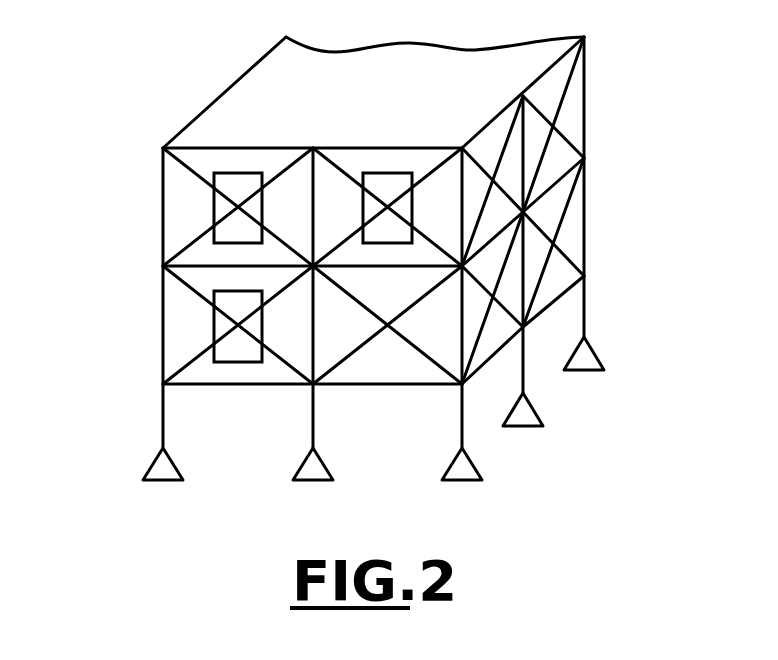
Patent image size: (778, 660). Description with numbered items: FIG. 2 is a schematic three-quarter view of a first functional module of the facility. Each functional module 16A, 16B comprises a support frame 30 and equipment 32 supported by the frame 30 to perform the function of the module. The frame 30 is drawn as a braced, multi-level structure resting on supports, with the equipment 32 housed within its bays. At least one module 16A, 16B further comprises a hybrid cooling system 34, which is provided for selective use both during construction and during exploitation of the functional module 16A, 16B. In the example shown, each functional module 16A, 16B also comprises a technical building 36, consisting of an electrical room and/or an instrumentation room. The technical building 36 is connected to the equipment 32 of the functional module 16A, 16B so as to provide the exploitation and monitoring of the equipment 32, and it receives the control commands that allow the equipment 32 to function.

The functional module 16A is at (361, 258).
The functional module 16B is at (396, 258).
The support frame 30 is at (642, 168).
The equipment 32 is at (214, 202).
The hybrid cooling system 34 is at (378, 178).
The technical building 36 is at (214, 325).